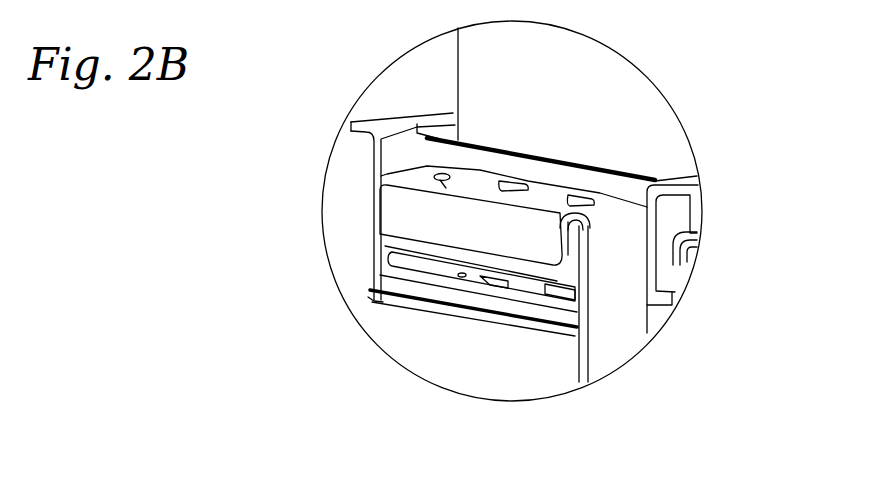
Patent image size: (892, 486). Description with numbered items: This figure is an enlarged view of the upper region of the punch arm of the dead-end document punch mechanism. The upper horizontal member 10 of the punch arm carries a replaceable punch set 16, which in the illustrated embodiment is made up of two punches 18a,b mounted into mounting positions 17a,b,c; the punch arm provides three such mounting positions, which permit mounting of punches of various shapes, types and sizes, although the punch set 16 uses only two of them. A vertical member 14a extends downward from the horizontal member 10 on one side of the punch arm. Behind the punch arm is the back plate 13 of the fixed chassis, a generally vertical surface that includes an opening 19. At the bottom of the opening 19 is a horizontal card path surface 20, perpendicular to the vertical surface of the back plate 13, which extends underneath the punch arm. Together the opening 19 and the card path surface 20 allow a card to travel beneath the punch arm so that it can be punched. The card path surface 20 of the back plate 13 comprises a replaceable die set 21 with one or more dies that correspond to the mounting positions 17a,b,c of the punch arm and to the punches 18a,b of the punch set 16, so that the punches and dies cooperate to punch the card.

The horizontal member 10 is at (423, 175).
The back plate 13 is at (627, 70).
The vertical member 14a is at (636, 333).
The punch set 16 is at (537, 158).
The mounting positions 17a,b,c is at (447, 184).
The punches 18a,b is at (527, 193).
The opening 19 is at (413, 268).
The card path surface 20 is at (447, 268).
The die set 21 is at (540, 313).